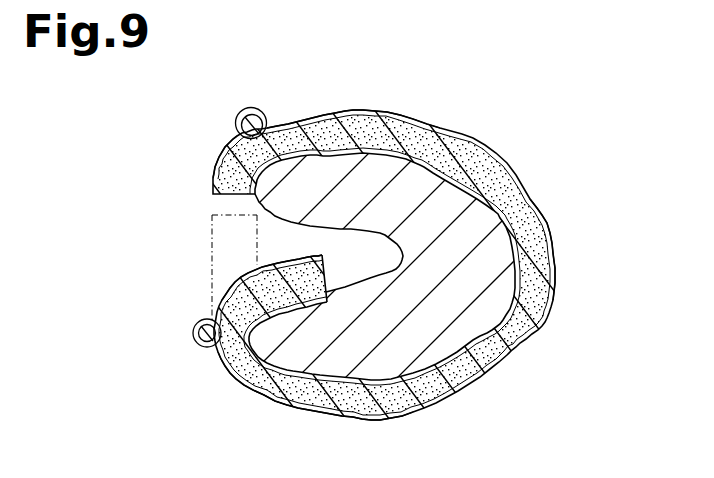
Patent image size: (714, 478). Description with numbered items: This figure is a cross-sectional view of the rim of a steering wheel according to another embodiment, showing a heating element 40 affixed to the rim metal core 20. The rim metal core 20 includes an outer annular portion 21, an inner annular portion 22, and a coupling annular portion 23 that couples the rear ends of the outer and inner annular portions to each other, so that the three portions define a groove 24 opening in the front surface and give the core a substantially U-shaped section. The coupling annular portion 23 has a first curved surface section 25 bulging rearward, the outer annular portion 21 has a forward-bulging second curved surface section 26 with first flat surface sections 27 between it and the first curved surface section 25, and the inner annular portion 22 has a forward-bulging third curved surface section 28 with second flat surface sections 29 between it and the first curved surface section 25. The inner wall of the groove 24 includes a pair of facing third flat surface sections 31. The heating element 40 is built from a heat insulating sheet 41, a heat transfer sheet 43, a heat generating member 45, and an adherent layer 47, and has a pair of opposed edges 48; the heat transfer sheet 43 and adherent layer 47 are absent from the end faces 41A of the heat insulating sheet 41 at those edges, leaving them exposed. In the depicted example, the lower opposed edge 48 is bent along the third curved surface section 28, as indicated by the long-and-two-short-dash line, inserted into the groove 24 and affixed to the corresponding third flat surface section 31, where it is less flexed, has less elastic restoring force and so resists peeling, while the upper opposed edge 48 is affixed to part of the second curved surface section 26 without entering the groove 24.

The rim metal core 20 is at (554, 273).
The coupling annular portion 23 is at (382, 266).
The outer annular portion 21 is at (283, 127).
The inner annular portion 22 is at (258, 398).
The groove 24 is at (404, 262).
The first curved surface section 25 is at (549, 241).
The second curved surface section 26 is at (226, 160).
The first flat surface section 27 is at (357, 110).
The third curved surface section 28 is at (233, 373).
The second flat surface section 29 is at (361, 421).
The third flat surface section 31 is at (333, 230).
The heating element 40 is at (553, 293).
The heat insulating sheet 41 is at (530, 350).
The end face 41A is at (228, 196).
The heat transfer sheet 43 is at (517, 374).
The heat generating member 45 is at (236, 119).
The adherent layer 47 is at (528, 320).
The opposed edge 48 is at (225, 190).